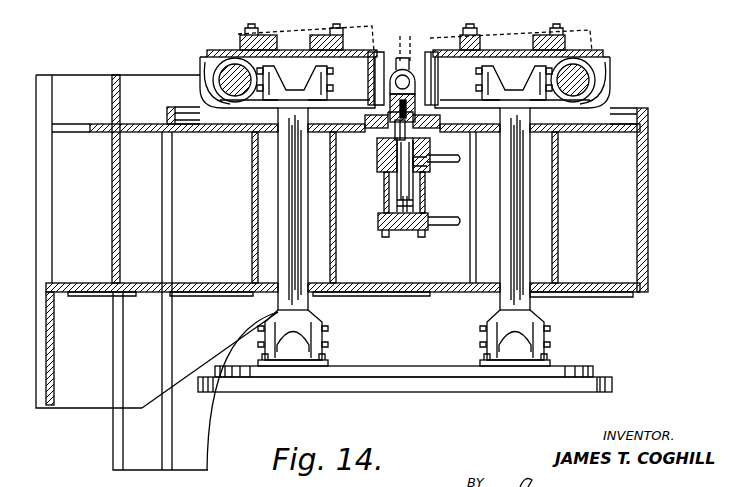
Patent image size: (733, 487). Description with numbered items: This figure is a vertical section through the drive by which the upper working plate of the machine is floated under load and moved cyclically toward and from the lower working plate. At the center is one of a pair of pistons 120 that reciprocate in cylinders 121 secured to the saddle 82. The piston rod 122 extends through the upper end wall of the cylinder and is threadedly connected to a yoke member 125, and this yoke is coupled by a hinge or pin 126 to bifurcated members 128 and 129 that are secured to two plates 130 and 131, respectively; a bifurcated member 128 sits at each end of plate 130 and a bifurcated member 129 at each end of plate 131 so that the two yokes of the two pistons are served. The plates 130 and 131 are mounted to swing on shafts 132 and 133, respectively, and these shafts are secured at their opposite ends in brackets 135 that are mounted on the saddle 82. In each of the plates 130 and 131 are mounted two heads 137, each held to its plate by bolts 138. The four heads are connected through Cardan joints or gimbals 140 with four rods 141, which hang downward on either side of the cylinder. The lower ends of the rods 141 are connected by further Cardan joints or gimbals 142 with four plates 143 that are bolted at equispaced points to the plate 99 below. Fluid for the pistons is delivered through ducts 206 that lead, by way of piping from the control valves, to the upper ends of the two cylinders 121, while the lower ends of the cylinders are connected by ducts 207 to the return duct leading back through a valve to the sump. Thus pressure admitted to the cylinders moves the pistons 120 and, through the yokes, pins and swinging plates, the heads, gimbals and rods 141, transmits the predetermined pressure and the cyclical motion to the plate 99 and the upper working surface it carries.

The saddle 82 is at (643, 197).
The plate 99 is at (406, 375).
The piston 120 is at (412, 197).
The cylinder 121 is at (387, 188).
The piston rod 122 is at (410, 182).
The yoke member 125 is at (416, 112).
The pin 126 is at (404, 76).
The bifurcated member 128 is at (421, 64).
The bifurcated member 129 is at (383, 70).
The plate 130 is at (585, 50).
The plate 131 is at (213, 62).
The shaft 132 is at (592, 80).
The shaft 133 is at (220, 78).
The bracket 135 is at (203, 92).
The head 137 is at (488, 42).
The bolt 138 is at (560, 30).
The Cardan joint 140 is at (313, 80).
The rod 141 is at (290, 236).
The Cardan joint 142 is at (510, 340).
The plate 143 is at (332, 366).
The duct 206 is at (451, 156).
The duct 207 is at (444, 226).